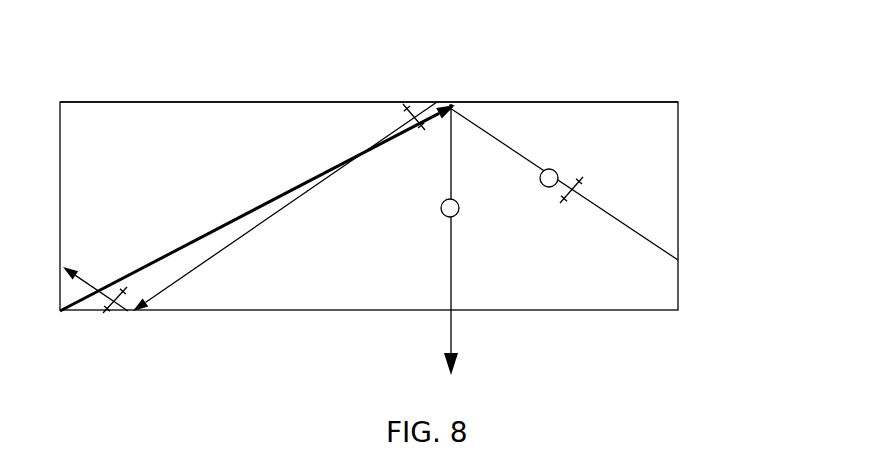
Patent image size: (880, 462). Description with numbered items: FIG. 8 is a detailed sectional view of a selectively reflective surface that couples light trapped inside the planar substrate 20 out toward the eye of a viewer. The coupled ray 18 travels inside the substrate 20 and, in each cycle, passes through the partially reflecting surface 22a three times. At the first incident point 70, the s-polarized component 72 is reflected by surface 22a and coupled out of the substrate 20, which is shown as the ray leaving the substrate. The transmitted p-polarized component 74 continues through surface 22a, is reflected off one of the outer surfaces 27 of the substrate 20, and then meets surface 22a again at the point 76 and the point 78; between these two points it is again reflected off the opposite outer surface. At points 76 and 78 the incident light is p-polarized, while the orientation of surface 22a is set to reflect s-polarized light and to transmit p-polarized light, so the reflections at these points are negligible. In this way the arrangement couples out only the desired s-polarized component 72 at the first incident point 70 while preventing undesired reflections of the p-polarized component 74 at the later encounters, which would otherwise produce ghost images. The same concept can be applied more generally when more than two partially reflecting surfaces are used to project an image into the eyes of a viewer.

The planar substrate 20 is at (623, 117).
The outer surface 27 is at (575, 101).
The first partially reflecting surface 22a is at (240, 218).
The point 76 is at (327, 168).
The transmitted p-polarized component 74 is at (385, 127).
The first incident point 70 is at (461, 100).
The coupled ray 18 is at (647, 240).
The s-polarized component 72 is at (452, 329).
The point 78 is at (88, 300).